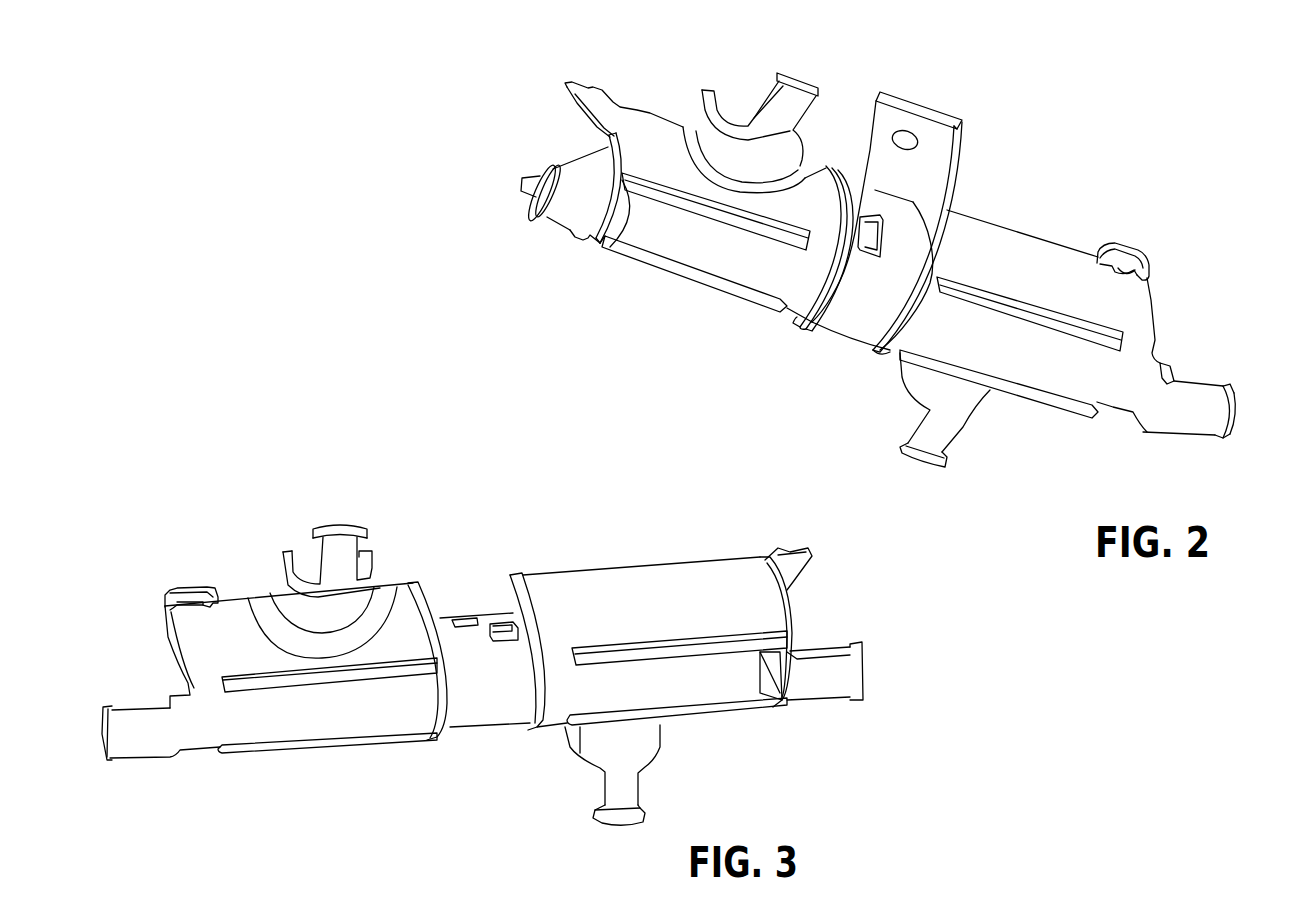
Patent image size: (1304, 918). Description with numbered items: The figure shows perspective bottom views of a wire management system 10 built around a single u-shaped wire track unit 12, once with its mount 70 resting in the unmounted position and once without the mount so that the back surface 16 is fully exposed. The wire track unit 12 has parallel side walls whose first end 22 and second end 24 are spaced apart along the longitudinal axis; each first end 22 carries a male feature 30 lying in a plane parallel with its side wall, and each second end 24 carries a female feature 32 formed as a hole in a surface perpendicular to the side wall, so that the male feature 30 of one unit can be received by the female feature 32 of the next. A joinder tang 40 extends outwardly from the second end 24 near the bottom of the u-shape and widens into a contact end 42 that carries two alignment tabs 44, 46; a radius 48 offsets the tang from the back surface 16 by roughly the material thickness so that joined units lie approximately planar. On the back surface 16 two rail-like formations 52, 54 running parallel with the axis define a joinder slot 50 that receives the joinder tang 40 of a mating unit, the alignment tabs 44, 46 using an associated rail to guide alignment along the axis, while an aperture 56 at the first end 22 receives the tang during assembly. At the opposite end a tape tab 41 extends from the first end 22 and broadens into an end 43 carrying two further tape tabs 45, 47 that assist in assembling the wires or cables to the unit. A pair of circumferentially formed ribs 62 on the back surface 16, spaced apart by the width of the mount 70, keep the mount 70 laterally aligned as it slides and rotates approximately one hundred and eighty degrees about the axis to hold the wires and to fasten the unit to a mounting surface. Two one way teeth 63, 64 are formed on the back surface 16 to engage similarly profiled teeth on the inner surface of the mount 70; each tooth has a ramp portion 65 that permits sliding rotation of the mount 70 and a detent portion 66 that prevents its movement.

In FIG. 2, the wire management system 10 is at (1142, 114).
In FIG. 3, the wire management system 10 is at (166, 512).
In FIG. 2, the wire track unit 12 is at (1033, 250).
In FIG. 3, the wire track unit 12 is at (600, 588).
In FIG. 2, the back surface 16 is at (727, 263).
In FIG. 3, the back surface 16 is at (557, 712).
In FIG. 2, the first end 22 is at (607, 150).
In FIG. 3, the first end 22 is at (793, 608).
In FIG. 2, the second end 24 is at (1157, 303).
In FIG. 3, the second end 24 is at (170, 640).
In FIG. 2, the male feature 30 is at (580, 85).
In FIG. 2, the female feature 32 is at (1130, 262).
In FIG. 2, the joinder tang 40 is at (1180, 417).
In FIG. 3, the joinder tang 40 is at (139, 745).
In FIG. 2, the tape tab 41 is at (552, 226).
In FIG. 3, the tape tab 41 is at (827, 692).
In FIG. 2, the contact end 42 is at (1226, 424).
In FIG. 2, the end 43 is at (522, 186).
In FIG. 2, the tab 44 is at (1227, 387).
In FIG. 2, the tape tab 45 is at (552, 166).
In FIG. 2, the tab 46 is at (1206, 434).
In FIG. 2, the tape tab 47 is at (548, 214).
In FIG. 2, the radius 48 is at (1170, 367).
In FIG. 2, the joinder slot 50 is at (653, 232).
In FIG. 3, the joinder slot 50 is at (372, 715).
In FIG. 2, the rail-like formation 52 is at (708, 213).
In FIG. 3, the rail-like formation 52 is at (300, 684).
In FIG. 2, the rail-like formation 54 is at (757, 296).
In FIG. 3, the rail-like formation 54 is at (272, 750).
In FIG. 2, the aperture 56 is at (601, 240).
In FIG. 2, the ribs 62 is at (877, 238).
In FIG. 3, the ribs 62 is at (452, 720).
In FIG. 3, the one way tooth 63 is at (455, 620).
In FIG. 2, the one way tooth 64 is at (870, 236).
In FIG. 3, the one way tooth 64 is at (488, 624).
In FIG. 3, the ramp portion 65 is at (508, 641).
In FIG. 3, the detent portion 66 is at (510, 626).
In FIG. 2, the mount 70 is at (933, 122).